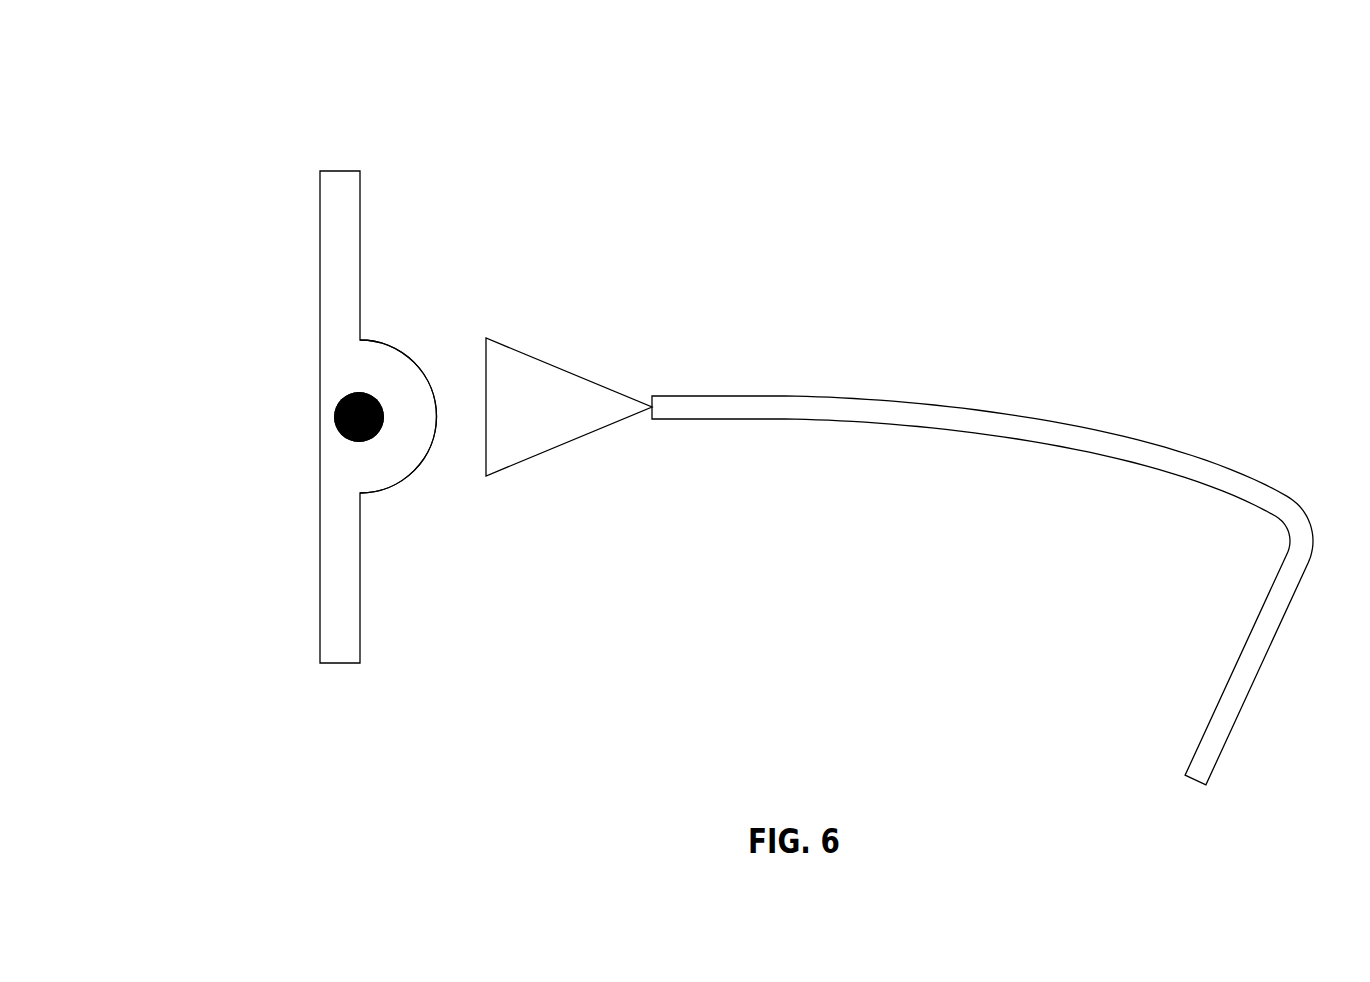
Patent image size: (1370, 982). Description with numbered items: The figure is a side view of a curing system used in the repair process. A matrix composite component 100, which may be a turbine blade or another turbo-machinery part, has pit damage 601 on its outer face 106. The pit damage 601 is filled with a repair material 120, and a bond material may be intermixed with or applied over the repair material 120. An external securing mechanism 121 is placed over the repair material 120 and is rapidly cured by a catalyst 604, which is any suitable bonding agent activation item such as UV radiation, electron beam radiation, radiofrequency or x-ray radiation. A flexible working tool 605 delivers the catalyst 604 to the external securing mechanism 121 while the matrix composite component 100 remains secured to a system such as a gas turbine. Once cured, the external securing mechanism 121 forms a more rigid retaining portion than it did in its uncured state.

The matrix composite component 100 is at (255, 175).
The outer face 106 is at (362, 213).
The external securing mechanism 121 is at (395, 347).
The pit damage 601 is at (337, 422).
The repair material 120 is at (380, 432).
The catalyst 604 is at (550, 435).
The flexible working tool 605 is at (1008, 415).